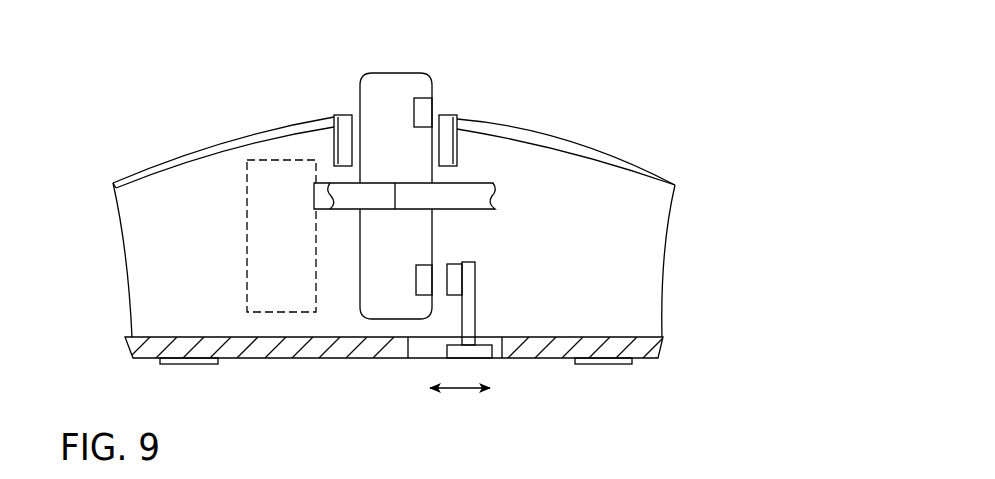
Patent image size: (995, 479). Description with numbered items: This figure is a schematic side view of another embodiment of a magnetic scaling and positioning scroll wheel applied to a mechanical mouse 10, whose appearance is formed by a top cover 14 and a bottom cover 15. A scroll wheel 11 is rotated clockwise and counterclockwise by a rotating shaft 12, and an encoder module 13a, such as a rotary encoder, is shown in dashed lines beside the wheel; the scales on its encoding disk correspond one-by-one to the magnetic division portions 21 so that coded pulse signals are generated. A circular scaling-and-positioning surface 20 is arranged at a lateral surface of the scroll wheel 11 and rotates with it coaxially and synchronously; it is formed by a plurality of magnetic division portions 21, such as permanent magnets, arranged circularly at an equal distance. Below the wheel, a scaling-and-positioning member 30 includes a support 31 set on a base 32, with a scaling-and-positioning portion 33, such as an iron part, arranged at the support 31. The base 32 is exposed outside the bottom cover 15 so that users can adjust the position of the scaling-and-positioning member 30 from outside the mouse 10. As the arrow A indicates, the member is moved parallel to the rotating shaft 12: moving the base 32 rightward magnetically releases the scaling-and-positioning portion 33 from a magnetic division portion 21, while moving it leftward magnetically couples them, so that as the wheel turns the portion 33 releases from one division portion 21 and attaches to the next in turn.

The mechanical mouse 10 is at (566, 129).
The scroll wheel 11 is at (358, 73).
The rotating shaft 12 is at (468, 193).
The encoder module 13a is at (272, 173).
The top cover 14 is at (637, 162).
The bottom cover 15 is at (652, 347).
The circular scaling-and-positioning surface 20 is at (412, 275).
The magnetic division portion 21 is at (433, 107).
The scaling-and-positioning member 30 is at (480, 324).
The support 31 is at (470, 303).
The base 32 is at (453, 352).
The scaling-and-positioning portion 33 is at (453, 273).
The arrow A is at (460, 404).